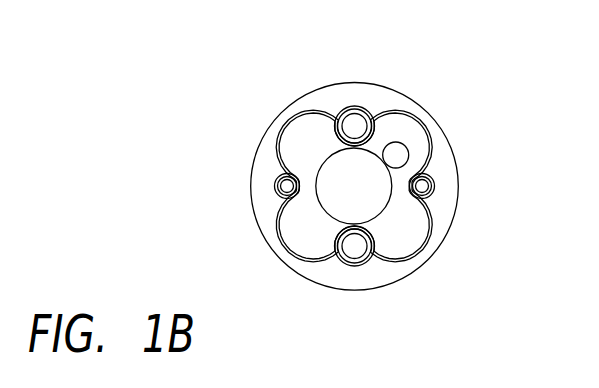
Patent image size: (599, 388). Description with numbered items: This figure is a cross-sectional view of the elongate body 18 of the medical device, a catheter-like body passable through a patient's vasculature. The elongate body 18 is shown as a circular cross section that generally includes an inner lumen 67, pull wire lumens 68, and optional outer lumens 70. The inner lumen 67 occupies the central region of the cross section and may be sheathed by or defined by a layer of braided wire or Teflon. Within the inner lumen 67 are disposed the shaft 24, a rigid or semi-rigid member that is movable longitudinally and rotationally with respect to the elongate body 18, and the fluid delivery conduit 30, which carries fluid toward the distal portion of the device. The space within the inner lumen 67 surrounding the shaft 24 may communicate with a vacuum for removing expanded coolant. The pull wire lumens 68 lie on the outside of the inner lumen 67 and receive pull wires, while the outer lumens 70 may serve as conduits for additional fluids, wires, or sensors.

The elongate body 18 is at (405, 95).
The shaft 24 is at (375, 198).
The fluid delivery conduit 30 is at (397, 154).
The inner lumen 67 is at (317, 233).
The pull wire lumens 68 is at (287, 187).
The outer lumens 70 is at (355, 127).